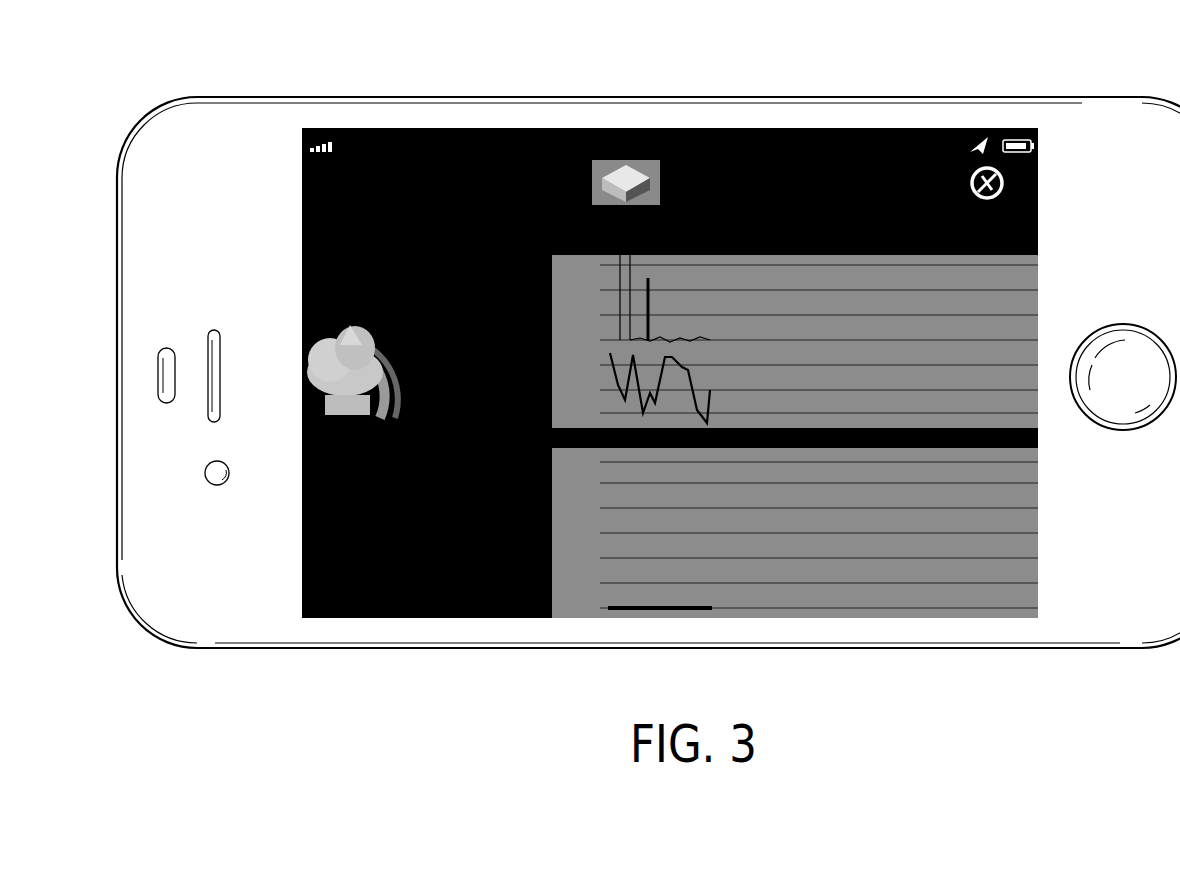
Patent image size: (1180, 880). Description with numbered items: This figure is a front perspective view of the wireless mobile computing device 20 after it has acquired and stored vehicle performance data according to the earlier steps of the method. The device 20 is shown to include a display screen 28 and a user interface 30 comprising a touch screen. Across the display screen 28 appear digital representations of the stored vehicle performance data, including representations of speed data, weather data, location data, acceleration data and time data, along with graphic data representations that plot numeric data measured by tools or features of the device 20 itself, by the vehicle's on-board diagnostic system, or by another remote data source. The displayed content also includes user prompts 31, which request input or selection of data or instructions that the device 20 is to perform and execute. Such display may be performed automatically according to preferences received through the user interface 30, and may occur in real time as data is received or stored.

The wireless mobile computing device 20 is at (1048, 98).
The display screen 28 is at (903, 618).
The user interface 30 is at (797, 618).
The user prompts 31 is at (996, 176).